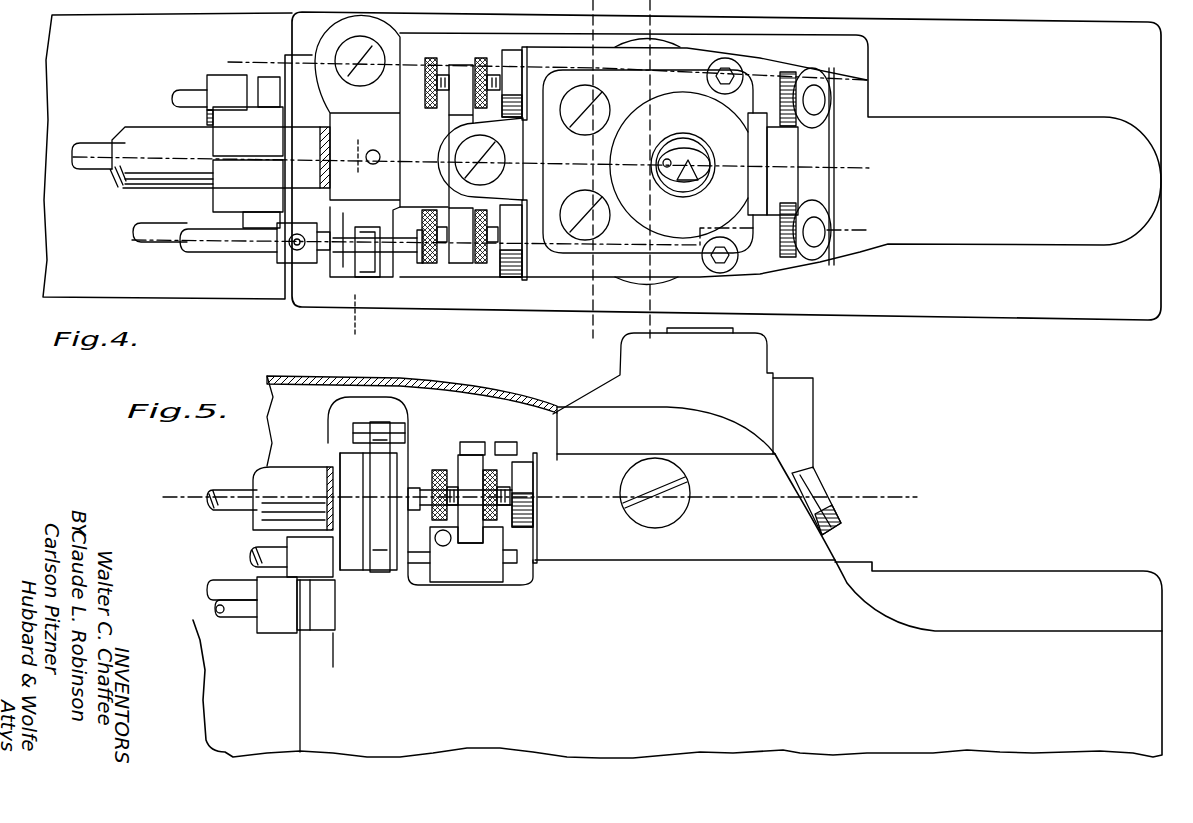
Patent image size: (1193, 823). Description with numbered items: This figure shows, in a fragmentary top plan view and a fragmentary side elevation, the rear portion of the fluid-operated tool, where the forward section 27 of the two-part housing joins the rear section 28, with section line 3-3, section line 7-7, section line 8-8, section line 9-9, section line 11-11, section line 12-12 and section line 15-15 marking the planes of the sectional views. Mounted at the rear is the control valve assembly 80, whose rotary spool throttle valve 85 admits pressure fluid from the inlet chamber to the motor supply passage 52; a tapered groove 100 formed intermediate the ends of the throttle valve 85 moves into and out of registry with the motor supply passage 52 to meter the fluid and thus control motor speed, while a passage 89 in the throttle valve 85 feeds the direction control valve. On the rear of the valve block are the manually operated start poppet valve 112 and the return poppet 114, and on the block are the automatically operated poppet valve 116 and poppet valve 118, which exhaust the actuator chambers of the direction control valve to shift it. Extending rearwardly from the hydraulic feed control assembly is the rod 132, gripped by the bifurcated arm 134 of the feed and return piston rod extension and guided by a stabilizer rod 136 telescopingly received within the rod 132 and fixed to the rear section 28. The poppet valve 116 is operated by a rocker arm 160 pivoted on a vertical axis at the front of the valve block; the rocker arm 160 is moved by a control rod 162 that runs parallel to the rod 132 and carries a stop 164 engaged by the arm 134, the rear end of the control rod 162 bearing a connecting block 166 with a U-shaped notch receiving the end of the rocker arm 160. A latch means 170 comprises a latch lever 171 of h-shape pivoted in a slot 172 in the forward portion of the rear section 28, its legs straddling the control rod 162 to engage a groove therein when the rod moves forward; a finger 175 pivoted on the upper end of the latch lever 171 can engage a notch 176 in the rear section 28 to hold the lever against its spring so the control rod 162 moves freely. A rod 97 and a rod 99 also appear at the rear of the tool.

In FIG. 5, the forward section 27 is at (220, 697).
In FIG. 4, the rear section 28 is at (930, 310).
In FIG. 5, the rear section 28 is at (968, 588).
In FIG. 5, the control valve assembly 80 is at (753, 358).
In FIG. 4, the throttle valve 85 is at (789, 168).
In FIG. 5, the throttle valve 85 is at (794, 376).
In FIG. 4, the motor supply passage 52 is at (680, 140).
In FIG. 4, the passage 89 is at (663, 164).
In FIG. 4, the tapered groove 100 is at (727, 167).
In FIG. 4, the poppet valve 112 is at (818, 230).
In FIG. 5, the poppet valve 112 is at (828, 491).
In FIG. 4, the return poppet 114 is at (823, 107).
In FIG. 4, the poppet valve 116 is at (503, 263).
In FIG. 4, the poppet valve 118 is at (500, 58).
In FIG. 4, the rod 132 is at (153, 127).
In FIG. 5, the rod 132 is at (277, 469).
In FIG. 4, the arm 134 is at (221, 201).
In FIG. 4, the stabilizer rod 136 is at (96, 166).
In FIG. 5, the stabilizer rod 136 is at (226, 491).
In FIG. 4, the rocker arm 160 is at (458, 118).
In FIG. 4, the control rod 162 is at (213, 252).
In FIG. 5, the control rod 162 is at (421, 568).
In FIG. 4, the stop 164 is at (284, 254).
In FIG. 5, the stop 164 is at (338, 572).
In FIG. 5, the connecting block 166 is at (463, 571).
In FIG. 4, the latch means 170 is at (377, 281).
In FIG. 5, the latch means 170 is at (378, 488).
In FIG. 4, the latch lever 171 is at (363, 247).
In FIG. 5, the latch lever 171 is at (384, 468).
In FIG. 5, the slot 172 is at (383, 552).
In FIG. 4, the finger 175 is at (435, 180).
In FIG. 5, the finger 175 is at (406, 453).
In FIG. 4, the notch 176 is at (333, 195).
In FIG. 5, the notch 176 is at (350, 455).
In FIG. 4, the rod 97 is at (192, 92).
In FIG. 5, the rod 97 is at (220, 583).
In FIG. 4, the rod 99 is at (147, 243).
In FIG. 5, the rod 99 is at (217, 610).
In FIG. 4, the section line 3- 3 is at (27, 130).
In FIG. 4, the section line 7- 7 is at (652, 4).
In FIG. 5, the section line 8- 8 is at (180, 514).
In FIG. 4, the section line 9- 9 is at (590, 5).
In FIG. 4, the section line 11- 11 is at (244, 48).
In FIG. 4, the section line 12- 12 is at (167, 245).
In FIG. 4, the section line 15- 15 is at (393, 157).